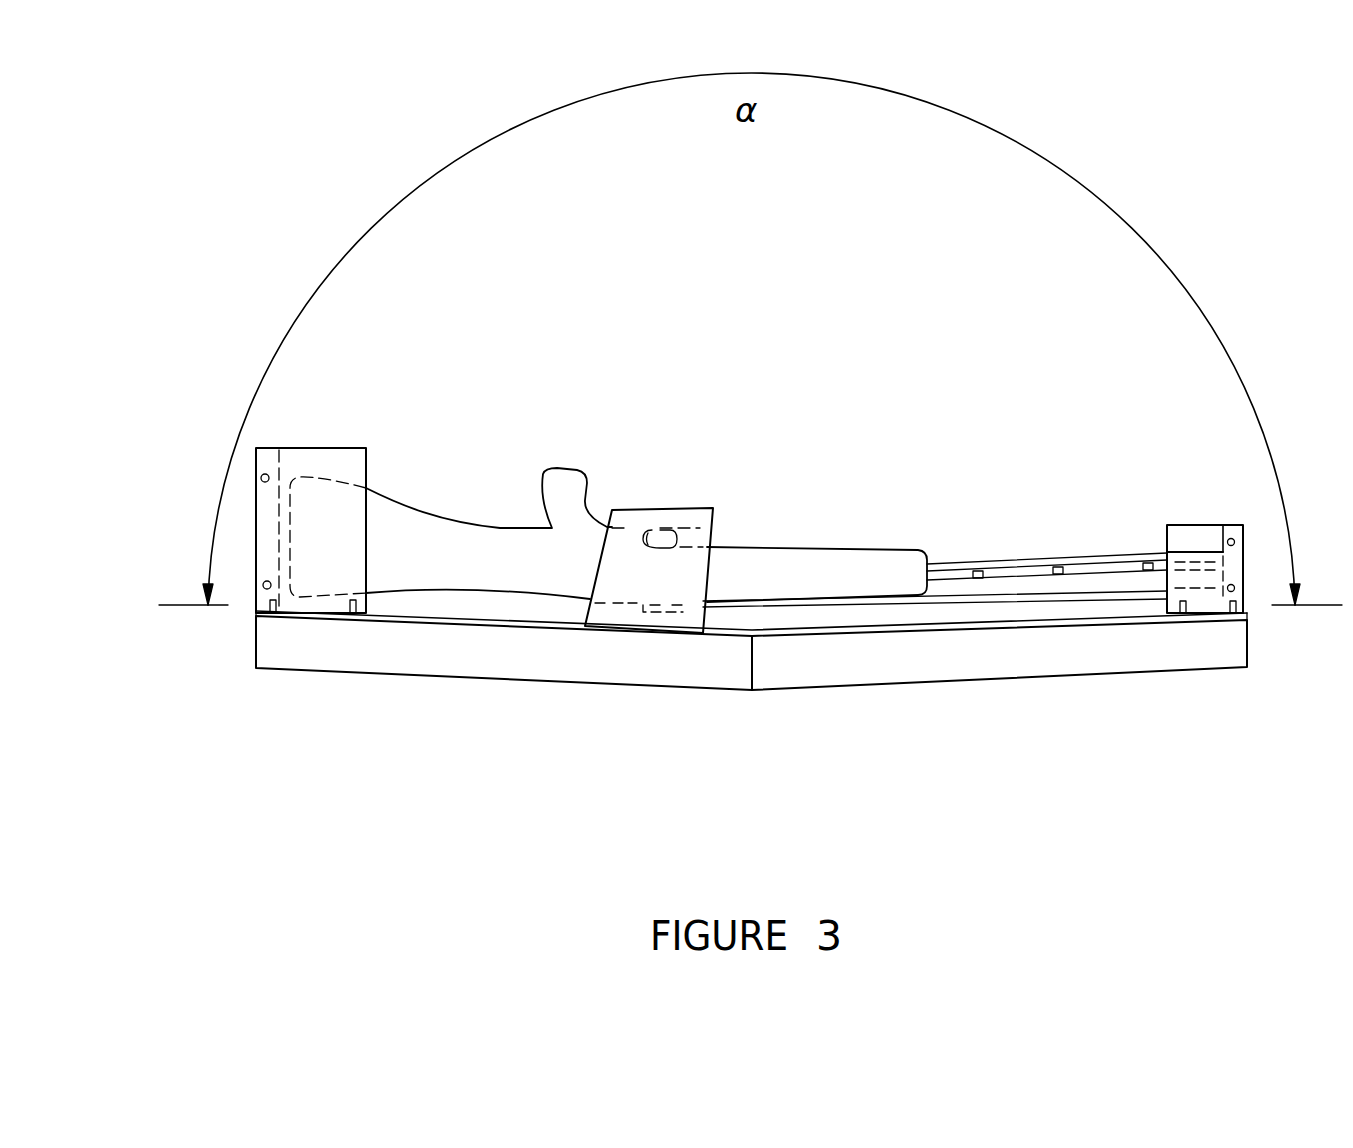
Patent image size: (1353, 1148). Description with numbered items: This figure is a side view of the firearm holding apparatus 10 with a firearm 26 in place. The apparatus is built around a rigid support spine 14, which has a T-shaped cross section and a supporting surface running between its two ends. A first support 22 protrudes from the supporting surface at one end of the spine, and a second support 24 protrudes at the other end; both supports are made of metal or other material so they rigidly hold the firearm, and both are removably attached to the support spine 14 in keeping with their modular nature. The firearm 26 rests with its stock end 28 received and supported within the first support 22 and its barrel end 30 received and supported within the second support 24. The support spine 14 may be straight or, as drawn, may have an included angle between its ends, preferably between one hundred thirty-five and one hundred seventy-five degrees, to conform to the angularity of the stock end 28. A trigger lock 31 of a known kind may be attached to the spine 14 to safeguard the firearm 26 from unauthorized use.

The firearm holding apparatus 10 is at (300, 229).
The support spine 14 is at (417, 663).
The first support 22 is at (287, 454).
The second support 24 is at (1228, 532).
The firearm 26 is at (740, 565).
The stock end 28 is at (375, 513).
The barrel end 30 is at (1007, 562).
The trigger lock 31 is at (615, 608).